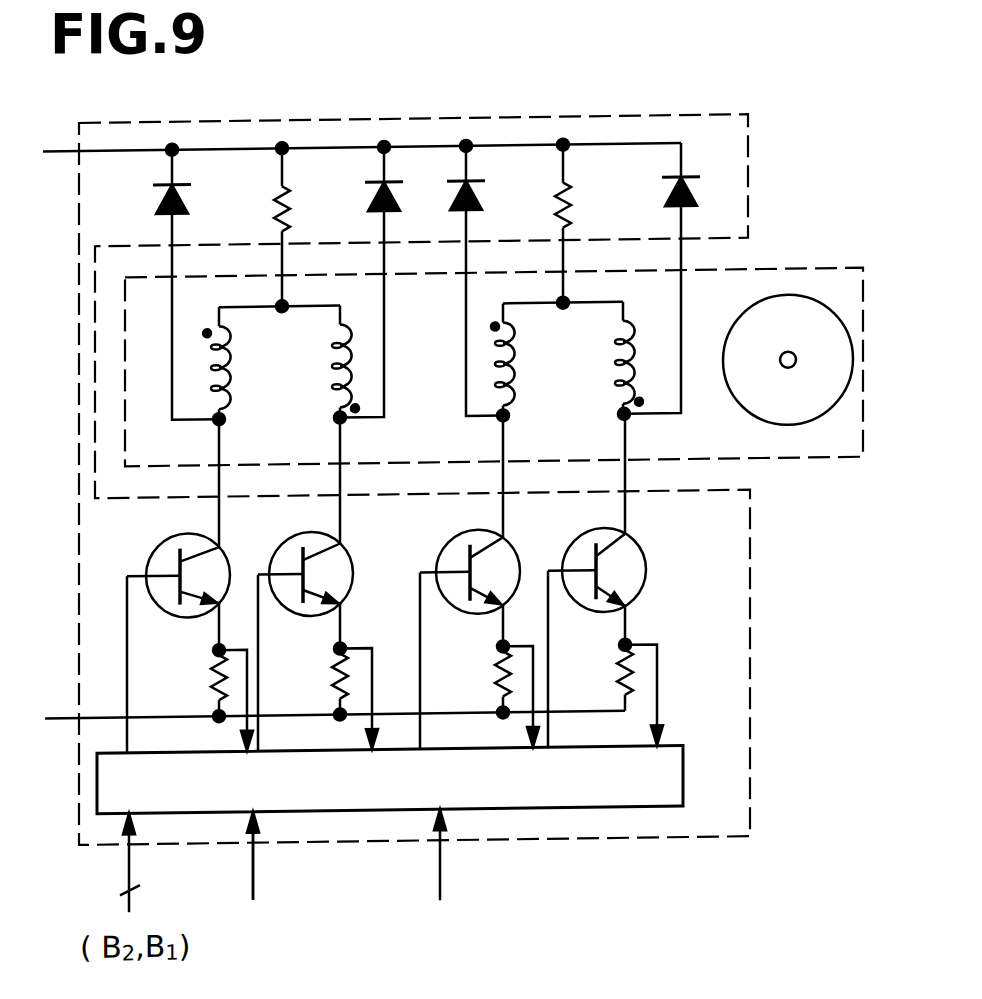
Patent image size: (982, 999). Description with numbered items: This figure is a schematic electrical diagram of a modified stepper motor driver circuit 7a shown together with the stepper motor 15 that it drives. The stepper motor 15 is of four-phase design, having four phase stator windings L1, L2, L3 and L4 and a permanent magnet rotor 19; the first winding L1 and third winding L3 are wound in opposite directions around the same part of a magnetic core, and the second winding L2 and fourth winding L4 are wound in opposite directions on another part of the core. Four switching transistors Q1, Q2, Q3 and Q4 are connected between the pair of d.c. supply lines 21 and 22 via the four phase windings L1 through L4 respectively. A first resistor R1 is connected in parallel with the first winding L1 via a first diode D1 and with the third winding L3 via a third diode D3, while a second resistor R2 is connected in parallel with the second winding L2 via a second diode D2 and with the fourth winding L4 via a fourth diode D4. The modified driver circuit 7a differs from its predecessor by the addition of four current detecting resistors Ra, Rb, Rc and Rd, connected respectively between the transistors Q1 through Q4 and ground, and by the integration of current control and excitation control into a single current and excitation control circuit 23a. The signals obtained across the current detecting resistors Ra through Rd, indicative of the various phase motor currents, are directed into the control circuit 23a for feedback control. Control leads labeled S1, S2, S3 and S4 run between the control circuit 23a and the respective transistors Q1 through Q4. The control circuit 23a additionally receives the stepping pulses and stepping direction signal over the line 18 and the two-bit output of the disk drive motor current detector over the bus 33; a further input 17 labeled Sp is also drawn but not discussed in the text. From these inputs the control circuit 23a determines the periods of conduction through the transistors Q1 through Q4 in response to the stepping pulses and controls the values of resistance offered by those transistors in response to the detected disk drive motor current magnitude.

The d.c. supply line 21 is at (102, 155).
The first diode D1 is at (190, 208).
The second diode D2 is at (481, 206).
The third diode D3 is at (393, 205).
The fourth diode D4 is at (690, 197).
The first resistor R1 is at (289, 210).
The second resistor R2 is at (571, 208).
The stepper motor 15 is at (789, 278).
The permanent magnet rotor 19 is at (742, 324).
The first phase stator winding L1 is at (233, 376).
The second phase stator winding L2 is at (516, 374).
The third phase stator winding L3 is at (334, 376).
The fourth phase stator winding L4 is at (618, 352).
The modified stepper motor driver circuit 7a is at (752, 572).
The switching transistor Q1 is at (148, 567).
The switching transistor Q2 is at (439, 563).
The switching transistor Q3 is at (274, 563).
The switching transistor Q4 is at (566, 560).
The drive signal line S1 is at (128, 652).
The drive signal line S2 is at (421, 648).
The drive signal line S3 is at (259, 653).
The drive signal line S4 is at (549, 650).
The current detecting resistor Ra is at (210, 680).
The current detecting resistor Rb is at (495, 674).
The current detecting resistor Rc is at (331, 682).
The current detecting resistor Rd is at (617, 676).
The d.c. supply line 22 is at (100, 719).
The current and excitation control circuit 23a is at (684, 750).
The bus 33 is at (126, 860).
The pulse signal input line 17 is at (249, 885).
The pulse signal Sp is at (256, 868).
The line 18 is at (443, 882).